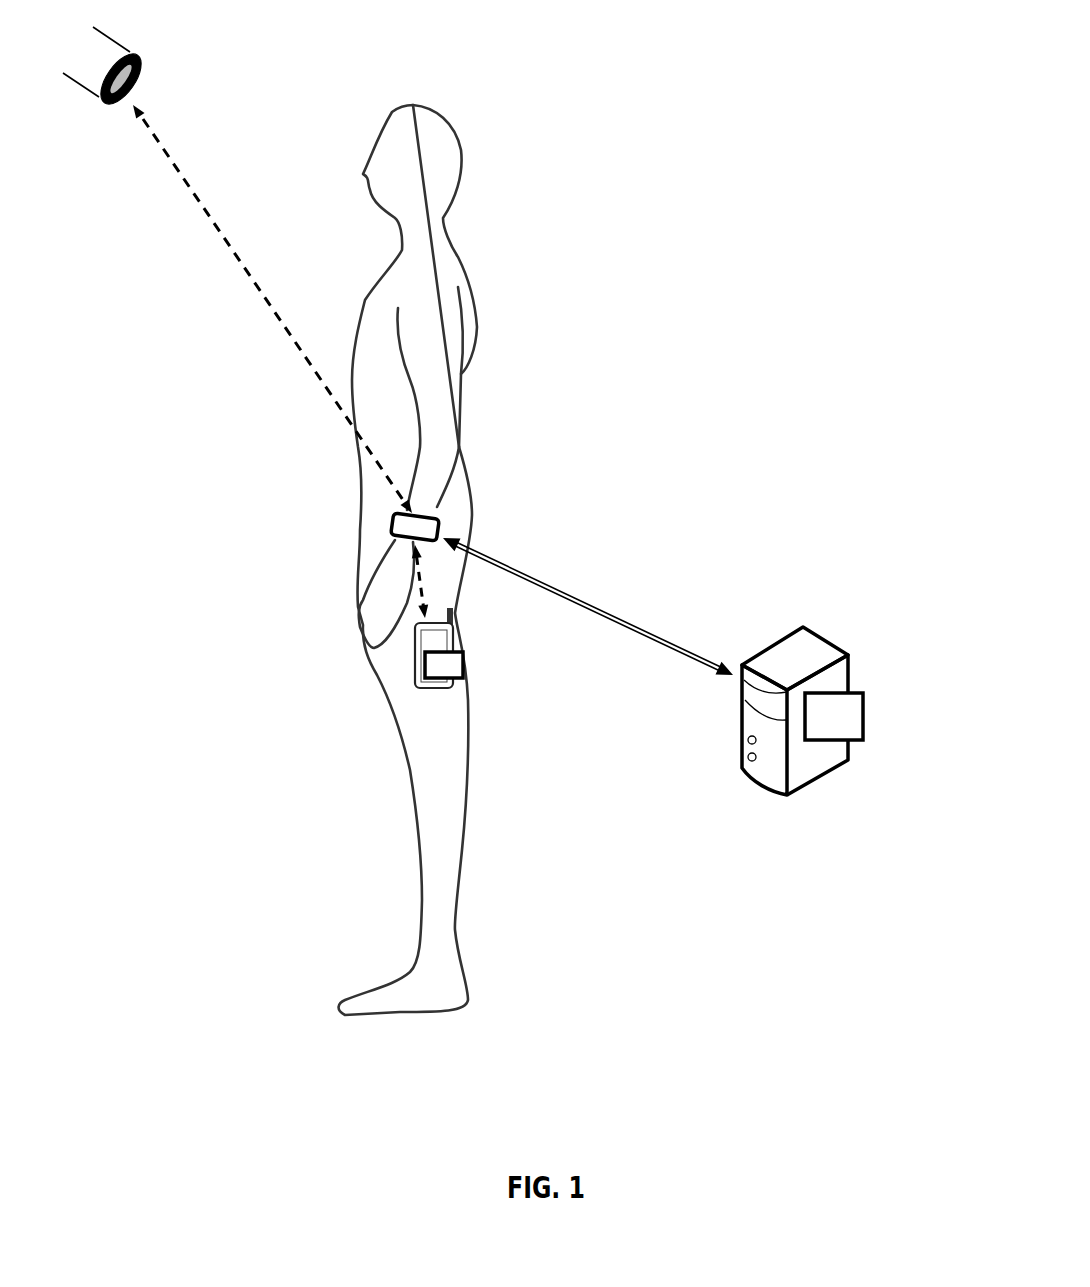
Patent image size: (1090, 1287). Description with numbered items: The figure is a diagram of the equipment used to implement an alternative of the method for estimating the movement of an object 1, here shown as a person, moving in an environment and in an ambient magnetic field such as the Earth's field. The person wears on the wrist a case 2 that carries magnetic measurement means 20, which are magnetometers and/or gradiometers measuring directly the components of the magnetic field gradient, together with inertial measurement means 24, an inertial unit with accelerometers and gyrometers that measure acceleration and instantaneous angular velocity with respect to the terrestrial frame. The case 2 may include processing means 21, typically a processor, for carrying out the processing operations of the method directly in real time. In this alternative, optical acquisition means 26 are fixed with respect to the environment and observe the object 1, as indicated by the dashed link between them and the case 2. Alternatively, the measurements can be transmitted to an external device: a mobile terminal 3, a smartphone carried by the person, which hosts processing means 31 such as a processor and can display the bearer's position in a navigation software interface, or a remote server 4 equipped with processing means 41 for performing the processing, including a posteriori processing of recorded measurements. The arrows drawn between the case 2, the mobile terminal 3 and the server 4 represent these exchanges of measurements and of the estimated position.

The object 1 is at (478, 328).
The case 2 is at (266, 500).
The magnetic measurement means 20 is at (266, 500).
The inertial measurement means 24 is at (266, 500).
The processing means 21 is at (390, 513).
The optical acquisition means 26 is at (140, 48).
The mobile terminal 3 is at (454, 683).
The processing means 31 is at (472, 668).
The remote server 4 is at (864, 667).
The processing means 41 is at (866, 722).